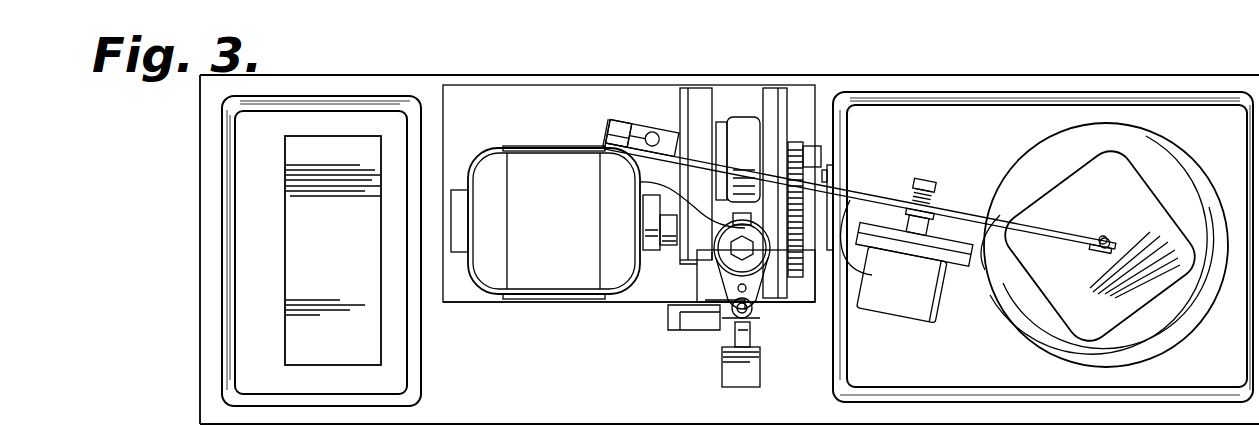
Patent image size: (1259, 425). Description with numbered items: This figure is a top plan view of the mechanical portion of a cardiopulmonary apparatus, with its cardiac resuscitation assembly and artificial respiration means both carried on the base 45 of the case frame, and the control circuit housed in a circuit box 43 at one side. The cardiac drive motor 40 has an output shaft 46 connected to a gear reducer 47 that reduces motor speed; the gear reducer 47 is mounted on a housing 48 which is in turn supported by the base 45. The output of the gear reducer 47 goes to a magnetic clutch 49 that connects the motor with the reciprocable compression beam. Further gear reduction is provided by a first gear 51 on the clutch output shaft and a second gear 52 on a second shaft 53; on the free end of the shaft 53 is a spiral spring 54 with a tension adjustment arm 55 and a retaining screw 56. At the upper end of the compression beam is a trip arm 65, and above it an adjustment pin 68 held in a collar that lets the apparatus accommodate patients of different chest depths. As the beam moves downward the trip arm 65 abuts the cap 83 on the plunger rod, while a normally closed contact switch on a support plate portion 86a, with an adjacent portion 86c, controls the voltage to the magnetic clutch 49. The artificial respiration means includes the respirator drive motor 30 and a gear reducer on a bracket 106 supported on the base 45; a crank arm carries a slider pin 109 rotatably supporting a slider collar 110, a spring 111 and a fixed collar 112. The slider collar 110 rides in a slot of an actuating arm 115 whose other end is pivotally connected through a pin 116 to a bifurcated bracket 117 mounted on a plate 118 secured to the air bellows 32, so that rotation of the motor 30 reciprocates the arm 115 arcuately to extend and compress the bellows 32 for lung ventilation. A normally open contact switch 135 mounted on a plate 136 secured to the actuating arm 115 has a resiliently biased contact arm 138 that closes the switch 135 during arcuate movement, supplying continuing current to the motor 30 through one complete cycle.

The respirator drive motor 30 is at (912, 318).
The air bellows 32 is at (1160, 155).
The drive motor 40 is at (545, 222).
The circuit box 43 is at (333, 250).
The base 45 is at (629, 340).
The output shaft 46 is at (662, 260).
The gear reducer 47 is at (662, 100).
The housing 48 is at (768, 276).
The magnetic clutch 49 is at (748, 128).
The first gear 51 is at (800, 145).
The second gear 52 is at (797, 270).
The second shaft 53 is at (914, 258).
The spiral spring 54 is at (848, 205).
The tension adjustment arm 55 is at (832, 135).
The retaining screw 56 is at (855, 195).
The trip arm 65 is at (752, 300).
The adjustment pin 68 is at (642, 182).
The cap 83 is at (738, 325).
The portion of support plate 86a is at (740, 378).
The bracket 86c is at (668, 332).
The bracket 106 is at (1000, 232).
The slider pin 109 is at (938, 186).
The slider collar 110 is at (915, 204).
The spring 111 is at (940, 200).
The fixed collar 112 is at (926, 180).
The actuating arm 115 is at (1022, 234).
The pin 116 is at (1112, 242).
The bifurcated bracket 117 is at (1095, 238).
The plate 118 is at (1099, 245).
The normally open contact switch 135 is at (610, 125).
The plate 136 is at (652, 125).
The contact arm 138 is at (618, 140).